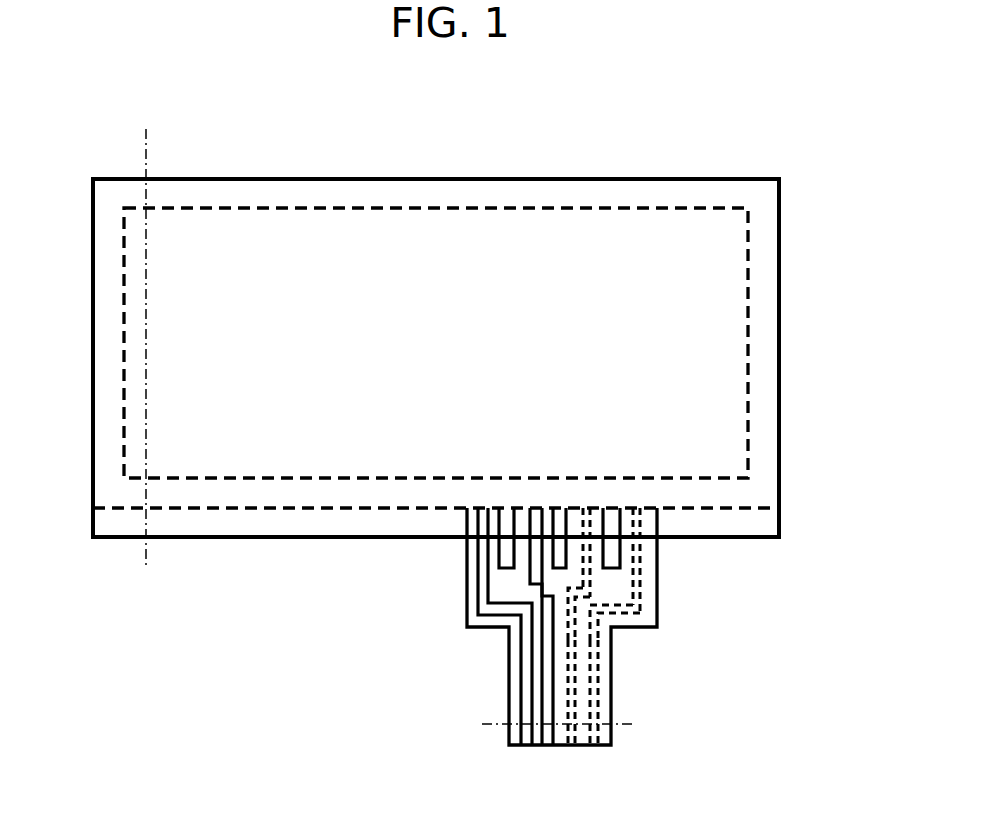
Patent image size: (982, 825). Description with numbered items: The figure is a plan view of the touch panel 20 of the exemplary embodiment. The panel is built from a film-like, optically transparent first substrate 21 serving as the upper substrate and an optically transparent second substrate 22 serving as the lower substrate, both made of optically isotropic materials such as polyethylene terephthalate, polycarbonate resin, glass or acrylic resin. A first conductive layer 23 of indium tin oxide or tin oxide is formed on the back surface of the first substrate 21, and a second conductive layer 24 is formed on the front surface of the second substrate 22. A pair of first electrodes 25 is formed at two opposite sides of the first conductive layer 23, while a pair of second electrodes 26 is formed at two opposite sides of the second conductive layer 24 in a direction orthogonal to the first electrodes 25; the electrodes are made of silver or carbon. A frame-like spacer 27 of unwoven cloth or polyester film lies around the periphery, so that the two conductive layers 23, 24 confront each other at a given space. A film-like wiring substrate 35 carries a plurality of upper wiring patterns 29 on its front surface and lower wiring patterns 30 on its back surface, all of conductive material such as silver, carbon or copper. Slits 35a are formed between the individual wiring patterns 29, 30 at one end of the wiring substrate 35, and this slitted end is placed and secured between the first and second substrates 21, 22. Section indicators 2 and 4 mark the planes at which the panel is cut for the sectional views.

The touch panel 20 is at (282, 555).
The first substrate 21 is at (585, 190).
The second substrate 22 is at (697, 177).
The first conductive layer 23 is at (337, 238).
The second conductive layer 24 is at (408, 238).
The first electrodes 25 is at (531, 511).
The second electrodes 26 is at (583, 512).
The spacer 27 is at (480, 192).
The upper wiring patterns 29 is at (547, 672).
The lower wiring patterns 30 is at (570, 660).
The wiring substrate 35 is at (645, 577).
The slits 35a is at (557, 553).
The section line 2- 2 is at (146, 129).
The section line 4- 4 is at (488, 706).